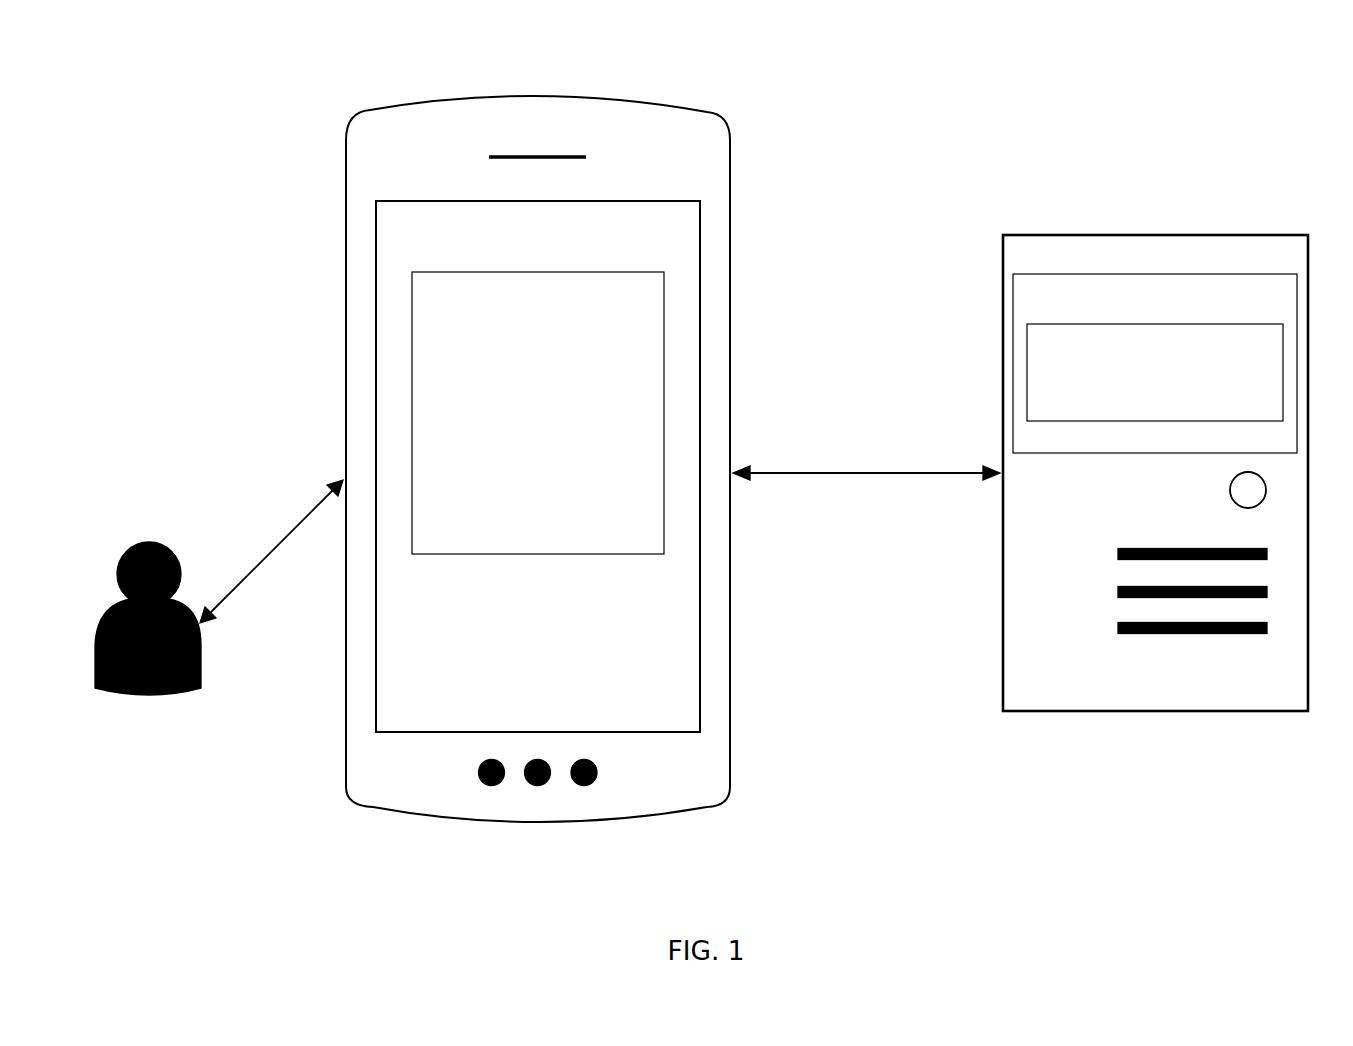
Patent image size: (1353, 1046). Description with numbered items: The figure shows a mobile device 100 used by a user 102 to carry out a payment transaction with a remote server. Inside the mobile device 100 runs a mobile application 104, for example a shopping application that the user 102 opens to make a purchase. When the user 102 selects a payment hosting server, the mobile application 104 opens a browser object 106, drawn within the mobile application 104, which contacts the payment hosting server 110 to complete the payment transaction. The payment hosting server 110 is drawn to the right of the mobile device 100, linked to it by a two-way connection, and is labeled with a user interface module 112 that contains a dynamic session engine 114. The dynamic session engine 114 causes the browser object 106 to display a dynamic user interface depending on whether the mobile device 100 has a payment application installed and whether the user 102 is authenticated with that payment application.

The mobile device 100 is at (367, 110).
The user 102 is at (148, 634).
The mobile application 104 is at (538, 466).
The browser object 106 is at (538, 413).
The payment hosting server 110 is at (1155, 491).
The user interface module 112 is at (1155, 363).
The dynamic session engine 114 is at (1155, 372).